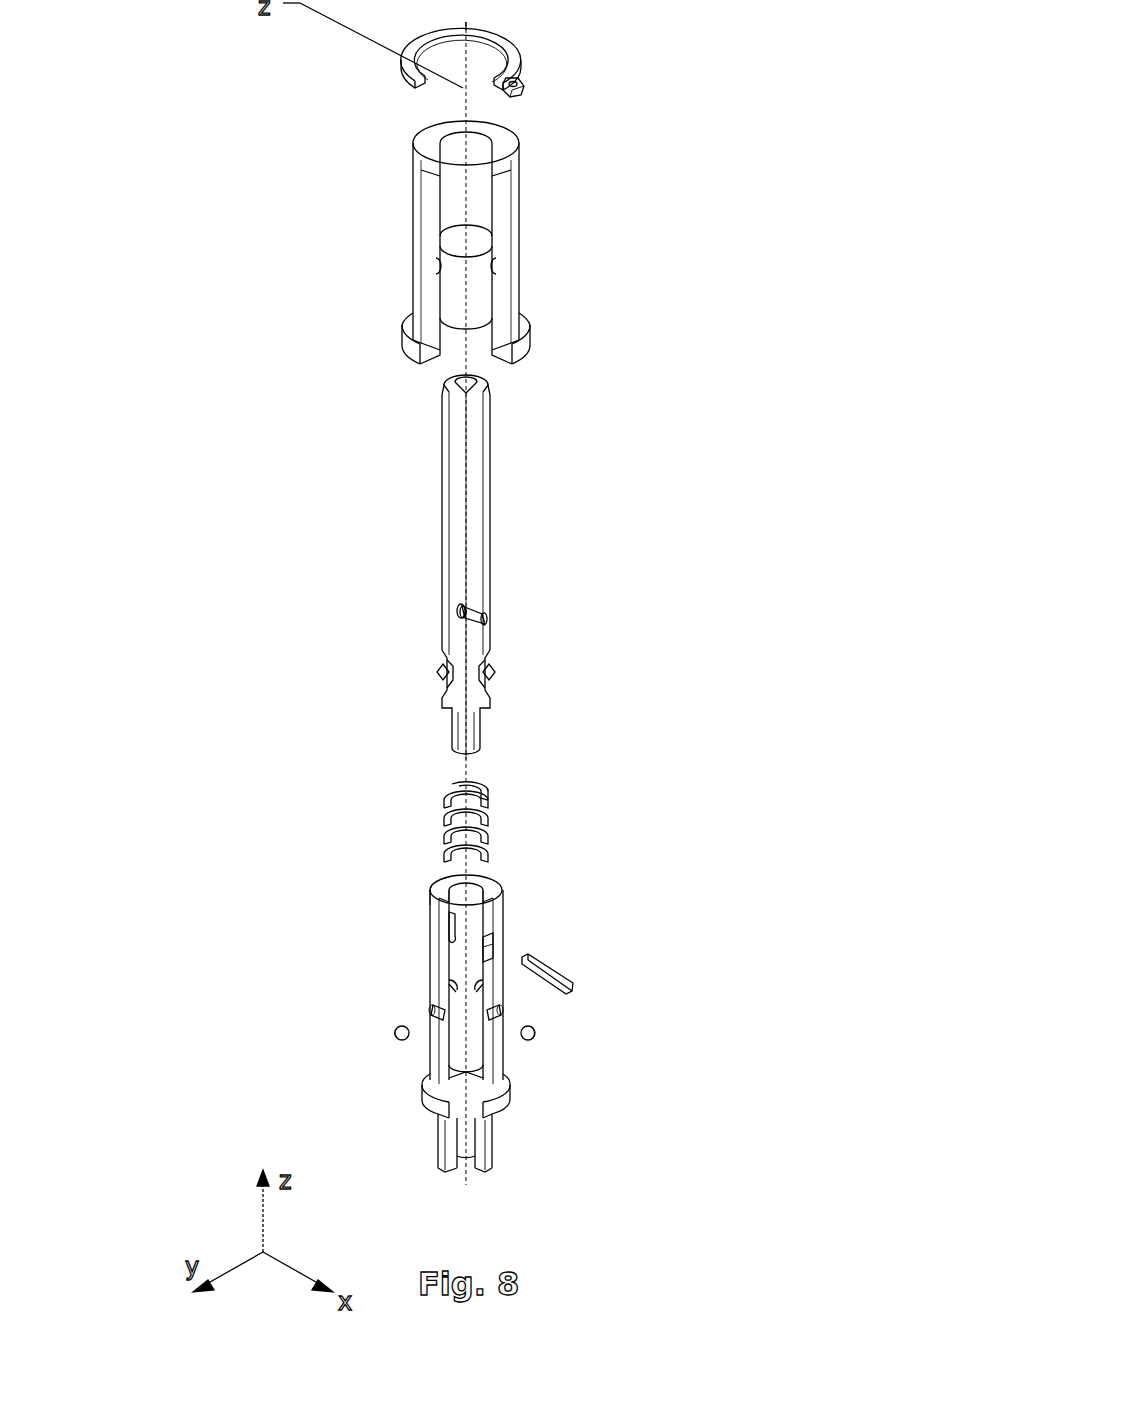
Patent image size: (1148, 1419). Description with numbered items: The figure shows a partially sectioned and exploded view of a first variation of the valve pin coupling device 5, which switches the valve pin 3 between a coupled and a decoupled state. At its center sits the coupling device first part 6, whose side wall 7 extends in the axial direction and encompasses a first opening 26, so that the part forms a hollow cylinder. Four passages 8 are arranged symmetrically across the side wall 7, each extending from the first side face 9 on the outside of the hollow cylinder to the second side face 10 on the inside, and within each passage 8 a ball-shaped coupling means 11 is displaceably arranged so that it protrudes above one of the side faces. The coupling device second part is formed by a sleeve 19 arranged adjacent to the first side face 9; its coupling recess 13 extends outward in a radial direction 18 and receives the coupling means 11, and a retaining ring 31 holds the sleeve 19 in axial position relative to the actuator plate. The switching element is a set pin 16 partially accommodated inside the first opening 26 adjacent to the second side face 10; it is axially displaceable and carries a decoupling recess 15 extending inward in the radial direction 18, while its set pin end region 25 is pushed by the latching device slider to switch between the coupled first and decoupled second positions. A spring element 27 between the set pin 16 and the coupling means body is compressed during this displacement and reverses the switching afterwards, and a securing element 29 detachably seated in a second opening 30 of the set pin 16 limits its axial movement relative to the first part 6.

The valve pin coupling device 5 is at (628, 31).
The retaining ring 31 is at (607, 93).
The coupling recess 13 is at (432, 232).
The sleeve 19 is at (627, 316).
The set pin end region 25 is at (452, 386).
The set pin 16 is at (628, 576).
The valve pin 3 is at (465, 612).
The second opening 30 is at (635, 631).
The decoupling recess 15 is at (630, 686).
The radial direction 18 is at (436, 678).
The spring element 27 is at (629, 858).
The first opening 26 is at (369, 809).
The second side face 10 is at (352, 829).
The first side face 9 is at (342, 865).
The side wall 7 is at (382, 996).
The passage 8 is at (710, 1205).
The coupling means 11 is at (395, 1037).
The securing element 29 is at (668, 974).
The coupling device first part 6 is at (521, 1191).